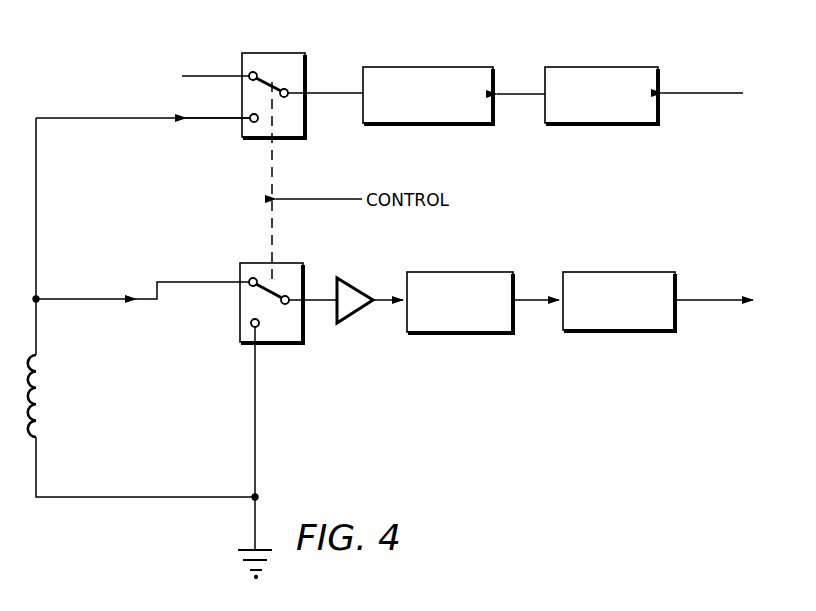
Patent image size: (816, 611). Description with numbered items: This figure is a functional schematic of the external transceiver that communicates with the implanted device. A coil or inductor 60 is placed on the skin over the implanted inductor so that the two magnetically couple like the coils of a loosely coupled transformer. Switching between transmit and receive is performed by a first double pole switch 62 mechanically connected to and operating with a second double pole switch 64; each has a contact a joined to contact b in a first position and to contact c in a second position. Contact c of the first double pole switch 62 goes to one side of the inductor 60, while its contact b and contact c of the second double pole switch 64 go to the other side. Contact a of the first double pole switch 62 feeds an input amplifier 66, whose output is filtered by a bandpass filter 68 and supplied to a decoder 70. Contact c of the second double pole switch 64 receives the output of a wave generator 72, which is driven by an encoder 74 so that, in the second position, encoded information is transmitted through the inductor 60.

The coil or inductor 60 is at (32, 384).
The first double pole switch 62 is at (304, 323).
The second double pole switch 64 is at (305, 56).
The input amplifier 66 is at (353, 288).
The bandpass filter 68 is at (485, 332).
The decoder 70 is at (655, 330).
The wave generator 72 is at (455, 67).
The encoder 74 is at (618, 67).